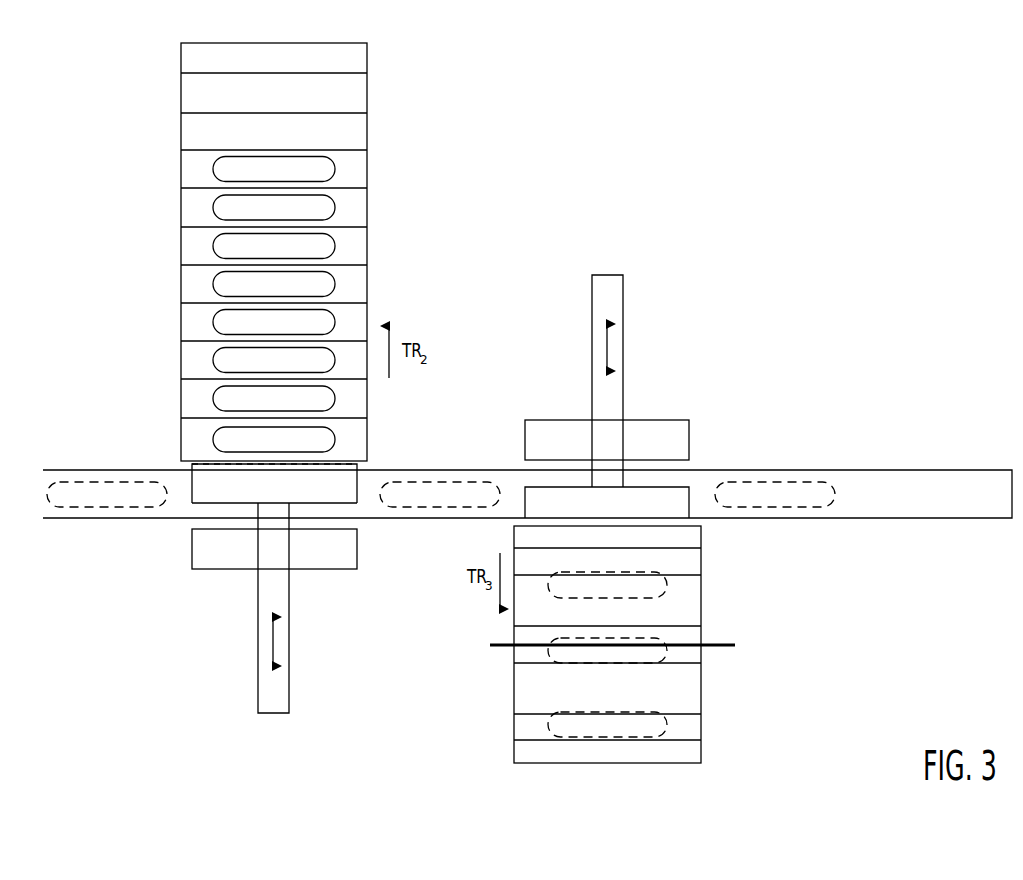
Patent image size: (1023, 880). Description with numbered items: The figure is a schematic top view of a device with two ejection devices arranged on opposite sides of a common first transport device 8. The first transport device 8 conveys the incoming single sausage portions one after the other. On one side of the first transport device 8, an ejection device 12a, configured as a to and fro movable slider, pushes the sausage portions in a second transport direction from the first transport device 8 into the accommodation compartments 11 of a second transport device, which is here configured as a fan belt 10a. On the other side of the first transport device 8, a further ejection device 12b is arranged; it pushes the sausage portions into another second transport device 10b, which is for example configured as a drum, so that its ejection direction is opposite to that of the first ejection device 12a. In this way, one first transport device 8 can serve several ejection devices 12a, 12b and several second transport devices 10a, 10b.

The first transport device 8 is at (852, 470).
The fan belt 10a is at (315, 252).
The second transport device configured as drum 10b is at (701, 727).
The accommodation compartments 11 is at (367, 400).
The ejection device 12a is at (289, 683).
The ejection device 12b is at (623, 293).